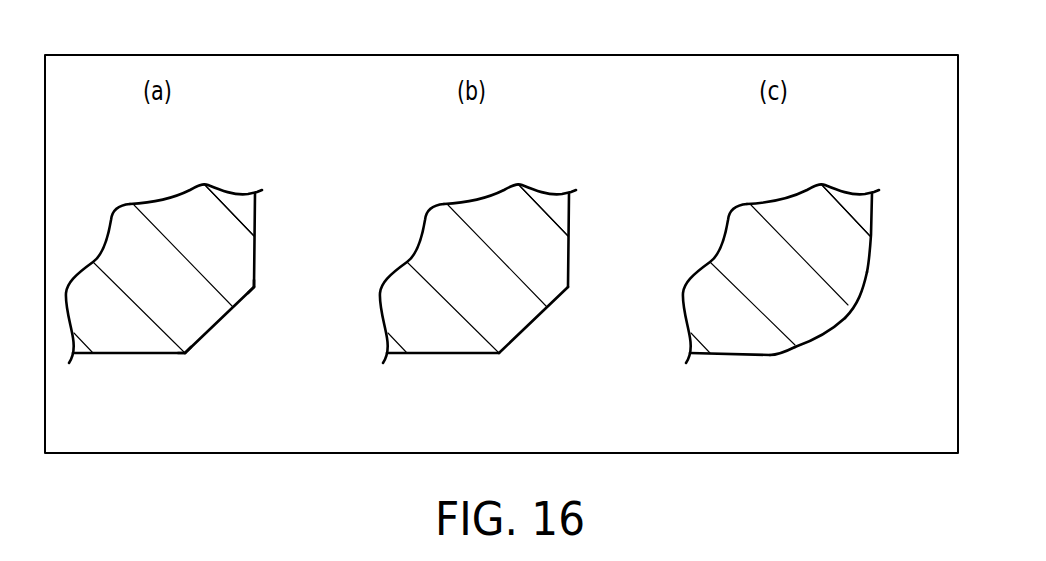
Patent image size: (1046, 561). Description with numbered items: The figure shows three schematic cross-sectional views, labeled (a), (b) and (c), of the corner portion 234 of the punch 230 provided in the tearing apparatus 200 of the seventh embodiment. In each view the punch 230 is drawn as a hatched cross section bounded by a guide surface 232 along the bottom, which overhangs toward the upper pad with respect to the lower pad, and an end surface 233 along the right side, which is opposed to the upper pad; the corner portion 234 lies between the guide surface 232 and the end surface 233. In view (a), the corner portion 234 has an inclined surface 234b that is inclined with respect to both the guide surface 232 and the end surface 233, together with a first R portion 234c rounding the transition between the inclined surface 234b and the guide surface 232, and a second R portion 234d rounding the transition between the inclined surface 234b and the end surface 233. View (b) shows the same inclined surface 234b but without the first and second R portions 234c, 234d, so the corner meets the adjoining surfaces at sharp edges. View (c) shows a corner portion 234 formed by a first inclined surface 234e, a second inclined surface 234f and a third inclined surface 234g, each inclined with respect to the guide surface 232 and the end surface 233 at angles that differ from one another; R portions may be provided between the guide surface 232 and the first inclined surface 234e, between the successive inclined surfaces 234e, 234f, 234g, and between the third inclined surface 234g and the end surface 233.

The tearing apparatus 200 is at (96, 206).
The punch 230 is at (181, 200).
The guide surface 232 is at (88, 355).
The end surface 233 is at (256, 207).
The corner portion 234 is at (230, 367).
The inclined surface 234b is at (222, 323).
The first R portion 234c is at (187, 355).
The second R portion 234d is at (255, 288).
The first inclined surface 234e is at (797, 346).
The second inclined surface 234f is at (838, 322).
The third inclined surface 234g is at (865, 276).